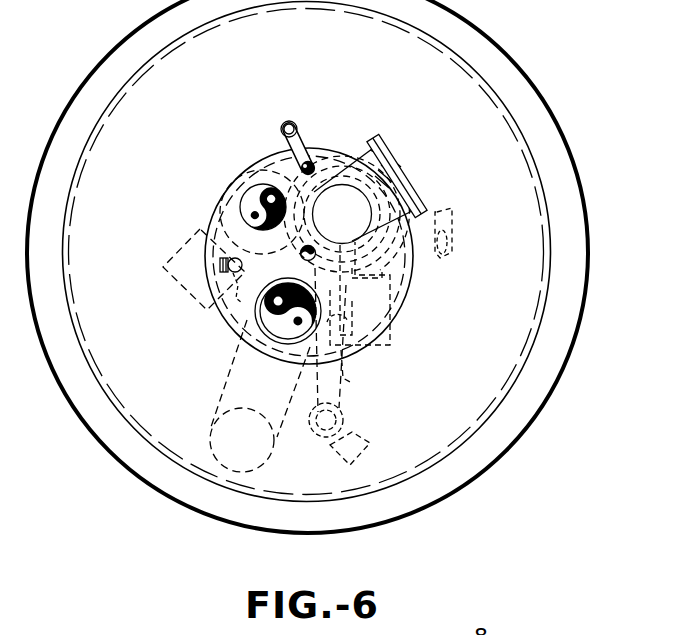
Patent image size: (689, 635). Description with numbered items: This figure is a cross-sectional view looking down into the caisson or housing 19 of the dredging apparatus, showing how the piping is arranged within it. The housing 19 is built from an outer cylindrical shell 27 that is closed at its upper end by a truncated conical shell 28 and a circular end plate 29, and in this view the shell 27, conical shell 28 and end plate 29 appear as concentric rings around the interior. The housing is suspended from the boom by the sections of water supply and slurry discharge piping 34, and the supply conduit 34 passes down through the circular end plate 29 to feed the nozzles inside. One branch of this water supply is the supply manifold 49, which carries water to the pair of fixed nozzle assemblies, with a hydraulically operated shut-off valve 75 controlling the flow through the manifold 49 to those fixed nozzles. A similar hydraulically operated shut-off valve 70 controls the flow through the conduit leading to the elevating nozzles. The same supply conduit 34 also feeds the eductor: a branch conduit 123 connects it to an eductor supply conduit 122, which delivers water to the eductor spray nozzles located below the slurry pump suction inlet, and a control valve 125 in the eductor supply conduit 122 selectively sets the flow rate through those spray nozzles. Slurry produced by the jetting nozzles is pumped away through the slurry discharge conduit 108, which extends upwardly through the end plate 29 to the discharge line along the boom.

The housing 19 is at (560, 116).
The outer cylindrical shell 27 is at (546, 210).
The truncated conical shell 28 is at (512, 300).
The circular end plate 29 is at (243, 315).
The water supply and slurry discharge piping 34 is at (238, 204).
The supply manifold 49 is at (438, 208).
The hydraulically operated shut-off valve 70 is at (178, 256).
The hydraulically operated shut-off valve 75 is at (410, 323).
The slurry discharge conduit 108 is at (210, 444).
The eductor supply conduit 122 is at (324, 437).
The branch conduit 123 is at (350, 382).
The control valve 125 is at (372, 437).